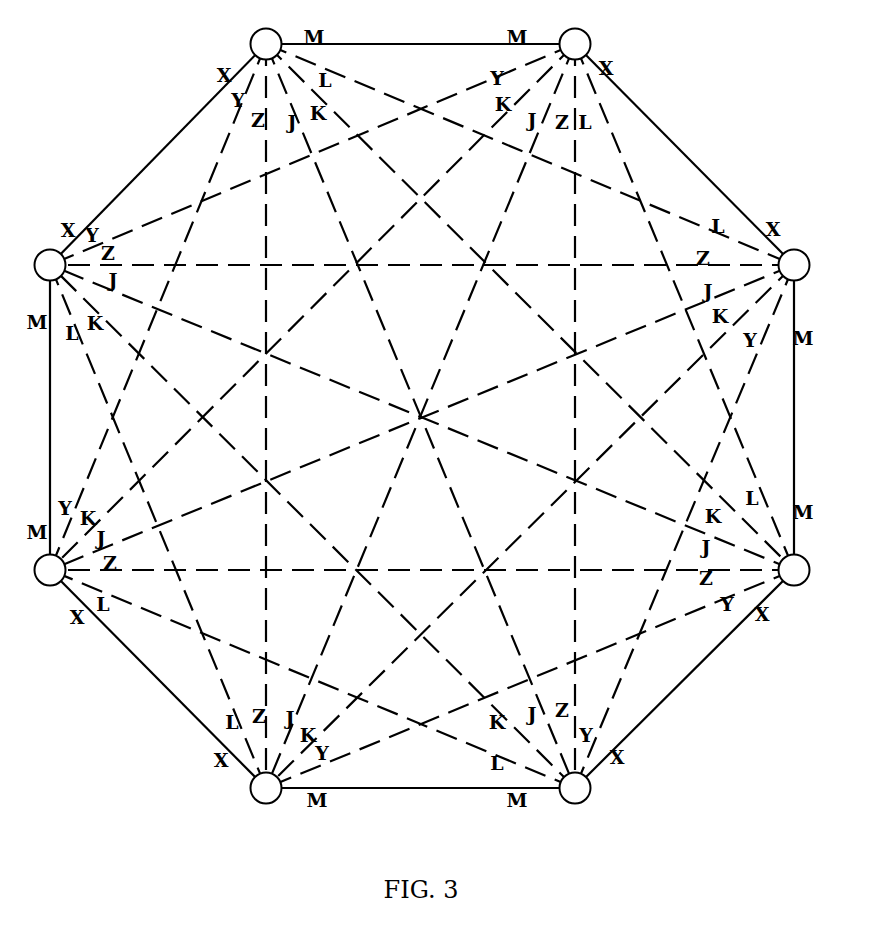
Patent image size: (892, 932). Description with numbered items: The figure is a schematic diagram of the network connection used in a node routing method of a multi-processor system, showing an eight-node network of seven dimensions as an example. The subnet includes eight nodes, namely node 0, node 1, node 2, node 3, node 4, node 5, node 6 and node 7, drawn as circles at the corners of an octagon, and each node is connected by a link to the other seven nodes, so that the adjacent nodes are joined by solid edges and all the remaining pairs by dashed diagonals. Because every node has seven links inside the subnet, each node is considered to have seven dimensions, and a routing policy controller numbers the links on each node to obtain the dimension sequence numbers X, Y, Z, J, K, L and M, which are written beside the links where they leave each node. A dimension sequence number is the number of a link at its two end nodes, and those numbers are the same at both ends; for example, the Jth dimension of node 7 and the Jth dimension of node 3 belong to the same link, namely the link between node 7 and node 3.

The node 0 is at (266, 44).
The node 1 is at (575, 44).
The node 2 is at (794, 265).
The node 3 is at (794, 570).
The node 4 is at (575, 788).
The node 5 is at (266, 788).
The node 6 is at (50, 570).
The node 7 is at (50, 265).